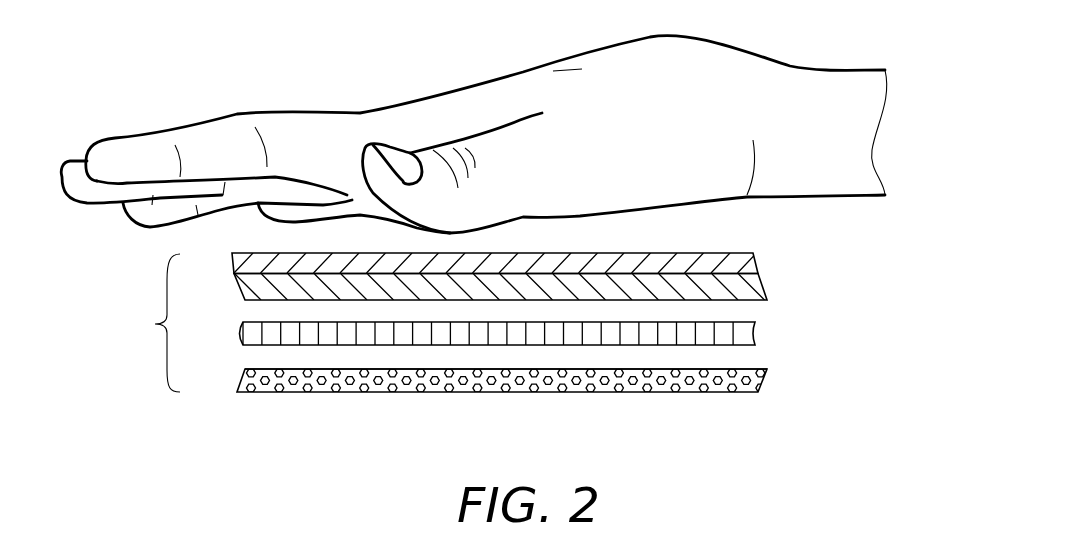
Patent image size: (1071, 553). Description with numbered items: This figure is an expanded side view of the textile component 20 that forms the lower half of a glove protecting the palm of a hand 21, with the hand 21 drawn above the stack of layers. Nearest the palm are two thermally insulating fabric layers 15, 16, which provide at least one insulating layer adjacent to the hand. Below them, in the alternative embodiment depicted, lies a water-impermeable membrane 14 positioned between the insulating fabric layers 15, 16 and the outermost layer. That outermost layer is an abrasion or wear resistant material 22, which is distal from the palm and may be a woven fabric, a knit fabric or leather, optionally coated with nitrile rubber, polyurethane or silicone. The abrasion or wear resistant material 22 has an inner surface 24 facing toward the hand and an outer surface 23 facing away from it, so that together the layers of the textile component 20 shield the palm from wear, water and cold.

The hand 21 is at (235, 112).
The textile component 20 is at (155, 324).
The thermally insulating fabric layer 15 is at (760, 262).
The thermally insulating fabric layer 16 is at (768, 290).
The water-impermeable membrane 14 is at (756, 333).
The abrasion or wear resistant material 22 is at (768, 382).
The outer surface 23 is at (703, 395).
The inner surface 24 is at (278, 370).